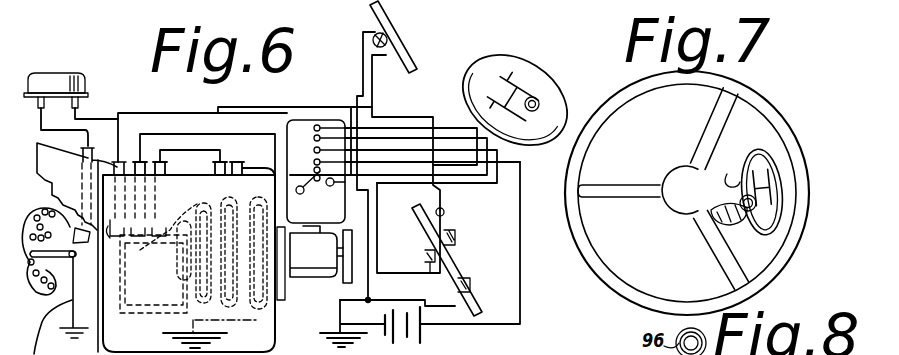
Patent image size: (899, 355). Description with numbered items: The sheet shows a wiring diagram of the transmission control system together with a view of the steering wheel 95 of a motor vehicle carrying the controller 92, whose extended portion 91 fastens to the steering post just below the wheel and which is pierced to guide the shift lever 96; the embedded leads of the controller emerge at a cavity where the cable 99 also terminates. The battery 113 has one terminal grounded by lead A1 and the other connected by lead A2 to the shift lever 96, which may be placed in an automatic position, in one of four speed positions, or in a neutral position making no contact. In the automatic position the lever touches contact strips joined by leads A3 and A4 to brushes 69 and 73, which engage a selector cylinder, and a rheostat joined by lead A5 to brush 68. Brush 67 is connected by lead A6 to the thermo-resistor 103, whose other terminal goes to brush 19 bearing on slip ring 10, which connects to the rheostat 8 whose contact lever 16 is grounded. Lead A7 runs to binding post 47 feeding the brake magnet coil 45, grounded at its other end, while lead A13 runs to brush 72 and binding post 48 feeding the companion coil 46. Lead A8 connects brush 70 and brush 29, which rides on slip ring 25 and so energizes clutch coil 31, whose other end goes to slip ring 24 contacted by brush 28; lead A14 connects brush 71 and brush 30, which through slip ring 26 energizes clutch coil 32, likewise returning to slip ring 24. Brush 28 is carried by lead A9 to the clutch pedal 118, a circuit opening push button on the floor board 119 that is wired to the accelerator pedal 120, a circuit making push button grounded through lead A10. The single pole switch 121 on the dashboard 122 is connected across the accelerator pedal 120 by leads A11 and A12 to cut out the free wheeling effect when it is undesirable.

In FIG. 6, the rheostat 8 is at (46, 281).
In FIG. 6, the slip ring 10 is at (82, 236).
In FIG. 6, the contact lever 16 is at (68, 248).
In FIG. 6, the brush 19 is at (115, 140).
In FIG. 6, the slip ring 24 is at (136, 218).
In FIG. 6, the slip ring 25 is at (153, 274).
In FIG. 6, the slip ring 26 is at (168, 220).
In FIG. 6, the brush assembly 28 is at (98, 152).
In FIG. 6, the brush assembly 29 is at (127, 157).
In FIG. 6, the brush assembly 30 is at (186, 256).
In FIG. 6, the magnet wire coil 31 is at (173, 250).
In FIG. 6, the magnet wire coil 32 is at (207, 253).
In FIG. 6, the magnet coil 45 is at (232, 252).
In FIG. 6, the magnet coil 46 is at (259, 253).
In FIG. 6, the binding post 47 is at (216, 162).
In FIG. 6, the binding post 48 is at (274, 182).
In FIG. 6, the brush 67 is at (300, 194).
In FIG. 6, the brush 68 is at (330, 187).
In FIG. 6, the brush 69 is at (319, 125).
In FIG. 6, the brush 70 is at (320, 148).
In FIG. 6, the brush 71 is at (314, 138).
In FIG. 6, the brush 72 is at (314, 126).
In FIG. 6, the brush 73 is at (314, 169).
In FIG. 7, the extended portion 91 is at (728, 171).
In FIG. 6, the controller 92 is at (548, 57).
In FIG. 7, the controller 92 is at (760, 154).
In FIG. 7, the steering wheel 95 is at (593, 122).
In FIG. 6, the shift lever 96 is at (540, 102).
In FIG. 7, the shift lever 96 is at (748, 212).
In FIG. 7, the cable 99 is at (727, 217).
In FIG. 6, the thermo-resistor 103 is at (56, 89).
In FIG. 6, the battery 113 is at (412, 346).
In FIG. 6, the clutch pedal 118 is at (453, 226).
In FIG. 6, the floor board 119 is at (462, 252).
In FIG. 6, the accelerator pedal 120 is at (473, 288).
In FIG. 6, the switch 121 is at (372, 34).
In FIG. 6, the dashboard 122 is at (390, 44).
In FIG. 6, the lead A1 is at (379, 325).
In FIG. 6, the lead A2 is at (514, 323).
In FIG. 6, the lead A3 is at (413, 128).
In FIG. 6, the lead A4 is at (399, 178).
In FIG. 6, the lead A5 is at (419, 185).
In FIG. 6, the lead A6 is at (85, 112).
In FIG. 6, the lead A7 is at (253, 103).
In FIG. 6, the lead A8 is at (184, 136).
In FIG. 6, the lead A9 is at (169, 110).
In FIG. 6, the lead A10 is at (422, 299).
In FIG. 6, the lead A11 is at (345, 70).
In FIG. 6, the lead A12 is at (406, 84).
In FIG. 6, the lead A13 is at (405, 155).
In FIG. 6, the lead A14 is at (205, 148).